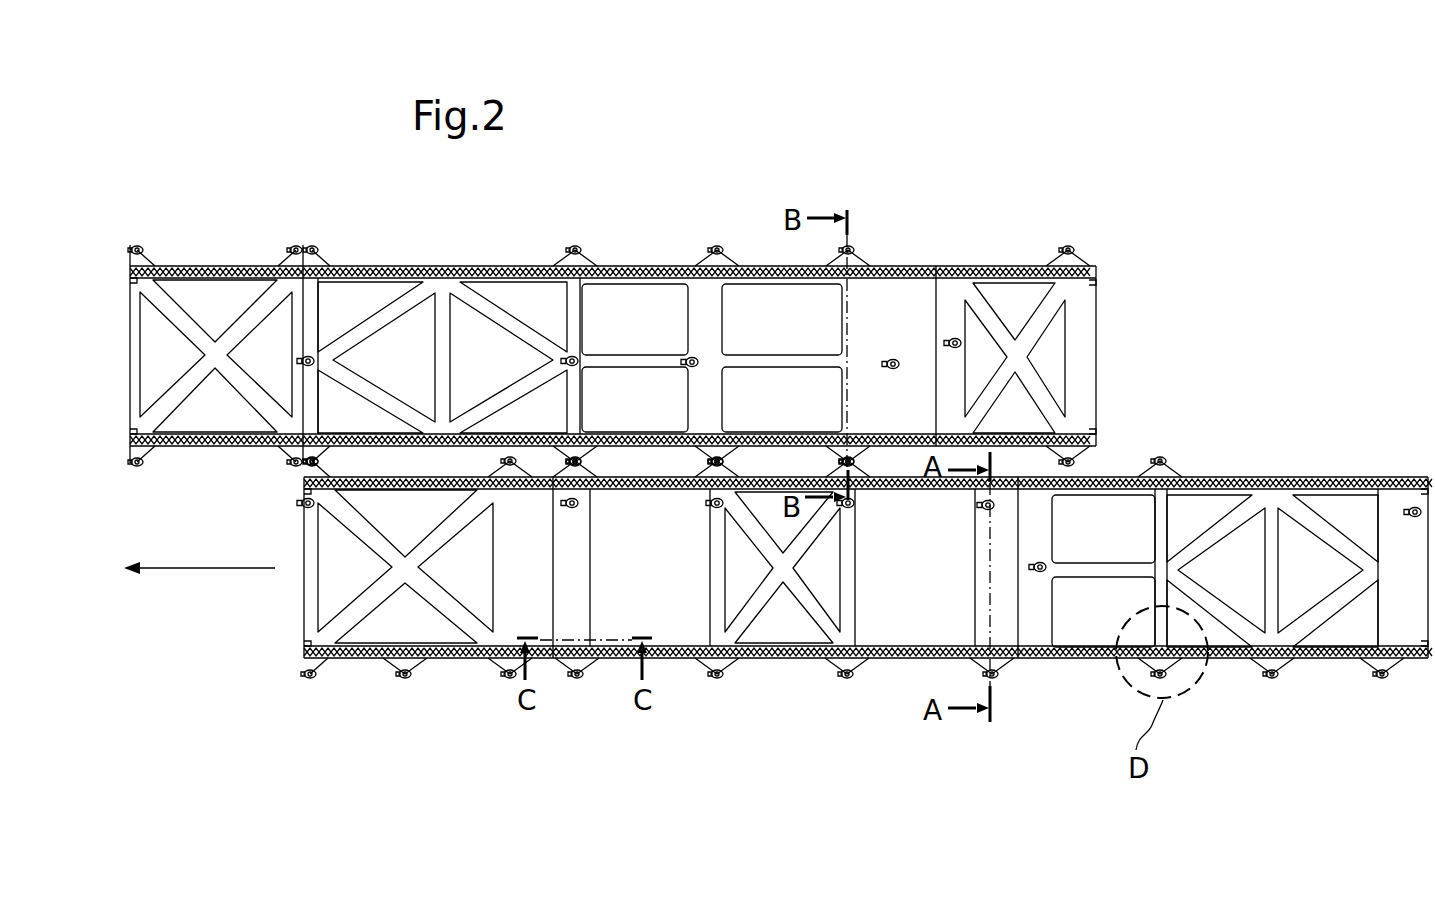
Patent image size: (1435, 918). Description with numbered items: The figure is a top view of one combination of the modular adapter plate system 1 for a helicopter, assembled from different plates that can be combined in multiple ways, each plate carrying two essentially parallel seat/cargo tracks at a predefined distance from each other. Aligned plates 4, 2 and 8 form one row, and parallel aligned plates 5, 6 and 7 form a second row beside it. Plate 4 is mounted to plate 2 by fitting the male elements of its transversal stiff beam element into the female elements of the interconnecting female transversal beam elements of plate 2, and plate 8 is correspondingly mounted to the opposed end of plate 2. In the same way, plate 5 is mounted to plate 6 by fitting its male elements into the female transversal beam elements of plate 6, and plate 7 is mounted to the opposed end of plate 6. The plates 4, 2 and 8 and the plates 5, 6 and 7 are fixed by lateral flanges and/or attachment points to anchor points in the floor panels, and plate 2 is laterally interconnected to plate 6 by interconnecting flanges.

The modular adapter plate system 1 is at (1240, 200).
The plate 2 is at (789, 690).
The plate 4 is at (416, 704).
The plate 5 is at (208, 234).
The plate 6 is at (632, 246).
The plate 7 is at (1008, 254).
The plate 8 is at (1266, 712).